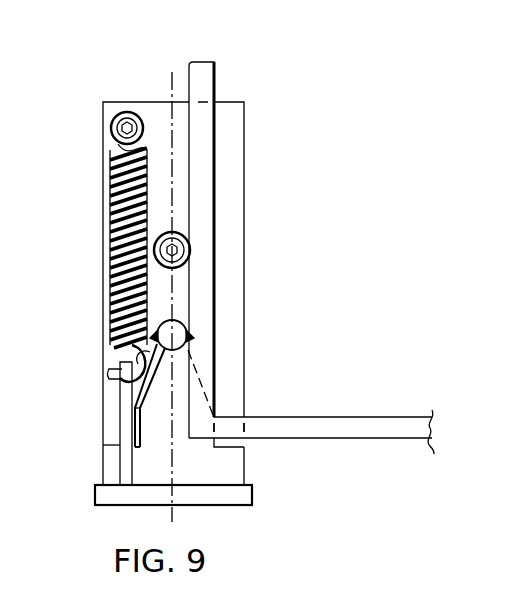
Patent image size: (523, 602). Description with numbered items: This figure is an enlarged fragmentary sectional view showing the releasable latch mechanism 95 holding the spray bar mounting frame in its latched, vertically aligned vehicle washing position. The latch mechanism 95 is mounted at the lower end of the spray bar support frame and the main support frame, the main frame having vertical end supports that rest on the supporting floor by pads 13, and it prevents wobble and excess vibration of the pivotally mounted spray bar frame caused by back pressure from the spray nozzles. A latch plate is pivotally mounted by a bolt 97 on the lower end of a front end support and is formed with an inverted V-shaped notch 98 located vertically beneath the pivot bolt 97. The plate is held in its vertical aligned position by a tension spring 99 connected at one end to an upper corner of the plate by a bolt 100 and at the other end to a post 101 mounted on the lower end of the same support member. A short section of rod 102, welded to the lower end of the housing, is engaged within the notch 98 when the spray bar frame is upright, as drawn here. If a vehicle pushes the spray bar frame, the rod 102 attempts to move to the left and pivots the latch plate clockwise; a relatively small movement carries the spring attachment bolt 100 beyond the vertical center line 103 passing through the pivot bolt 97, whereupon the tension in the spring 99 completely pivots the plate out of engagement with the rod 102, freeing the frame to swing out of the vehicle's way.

The pads 13 is at (238, 494).
The releasable latch mechanism 95 is at (284, 176).
The pivot bolt 97 is at (190, 248).
The inverted V-shaped notch 98 is at (143, 392).
The tension spring 99 is at (130, 208).
The spring attachment bolt 100 is at (128, 126).
The post 101 is at (120, 465).
The latch rod 102 is at (187, 337).
The vertical center line 103 is at (172, 82).